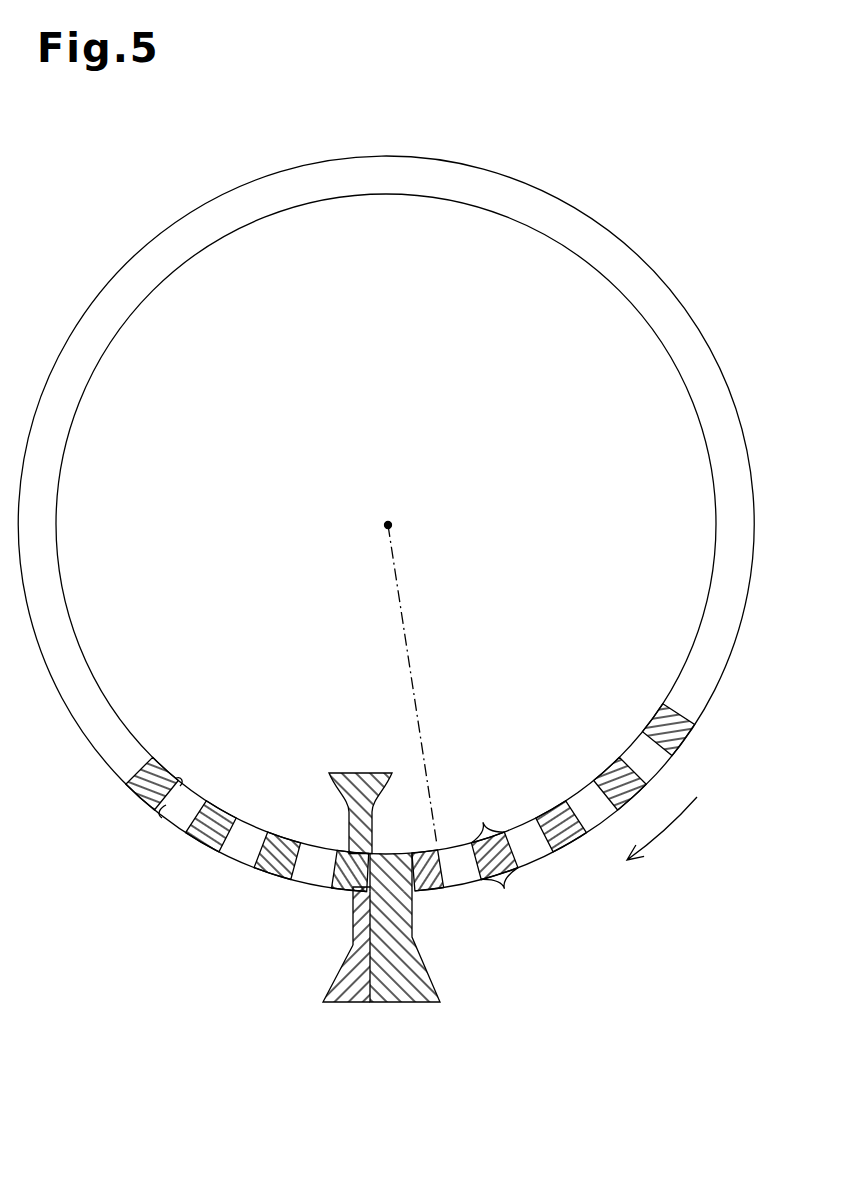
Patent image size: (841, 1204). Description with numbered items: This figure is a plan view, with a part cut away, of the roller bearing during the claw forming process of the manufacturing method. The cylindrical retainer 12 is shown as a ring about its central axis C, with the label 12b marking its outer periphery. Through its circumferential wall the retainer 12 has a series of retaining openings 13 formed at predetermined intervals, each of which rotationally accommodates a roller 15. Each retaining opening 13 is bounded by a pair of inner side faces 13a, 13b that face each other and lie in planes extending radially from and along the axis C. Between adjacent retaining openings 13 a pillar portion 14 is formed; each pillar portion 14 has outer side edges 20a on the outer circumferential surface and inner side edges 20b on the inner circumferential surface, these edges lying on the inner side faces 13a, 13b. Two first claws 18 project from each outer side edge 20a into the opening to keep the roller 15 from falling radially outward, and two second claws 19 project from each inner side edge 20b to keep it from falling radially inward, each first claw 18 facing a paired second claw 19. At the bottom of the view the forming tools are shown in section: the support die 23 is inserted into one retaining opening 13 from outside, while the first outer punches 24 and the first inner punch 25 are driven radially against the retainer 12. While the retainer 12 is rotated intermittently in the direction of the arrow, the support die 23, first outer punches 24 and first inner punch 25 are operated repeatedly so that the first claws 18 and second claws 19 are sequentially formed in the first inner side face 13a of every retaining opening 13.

The retainer 12 is at (386, 499).
The outer peripheral surface of ring 12b is at (519, 181).
The retaining opening 13 is at (166, 816).
The first inner side face 13a is at (341, 856).
The inner side face 13b is at (270, 836).
The pillar portion 14 is at (537, 849).
The roller 15 is at (197, 789).
The first claw 18 is at (351, 910).
The second claw 19 is at (236, 827).
The outer side edge 20a is at (507, 893).
The inner side edge 20b is at (483, 818).
The support die 23 is at (413, 936).
The first outer punch 24 is at (353, 939).
The first inner punch 25 is at (372, 816).
The axis C is at (409, 668).